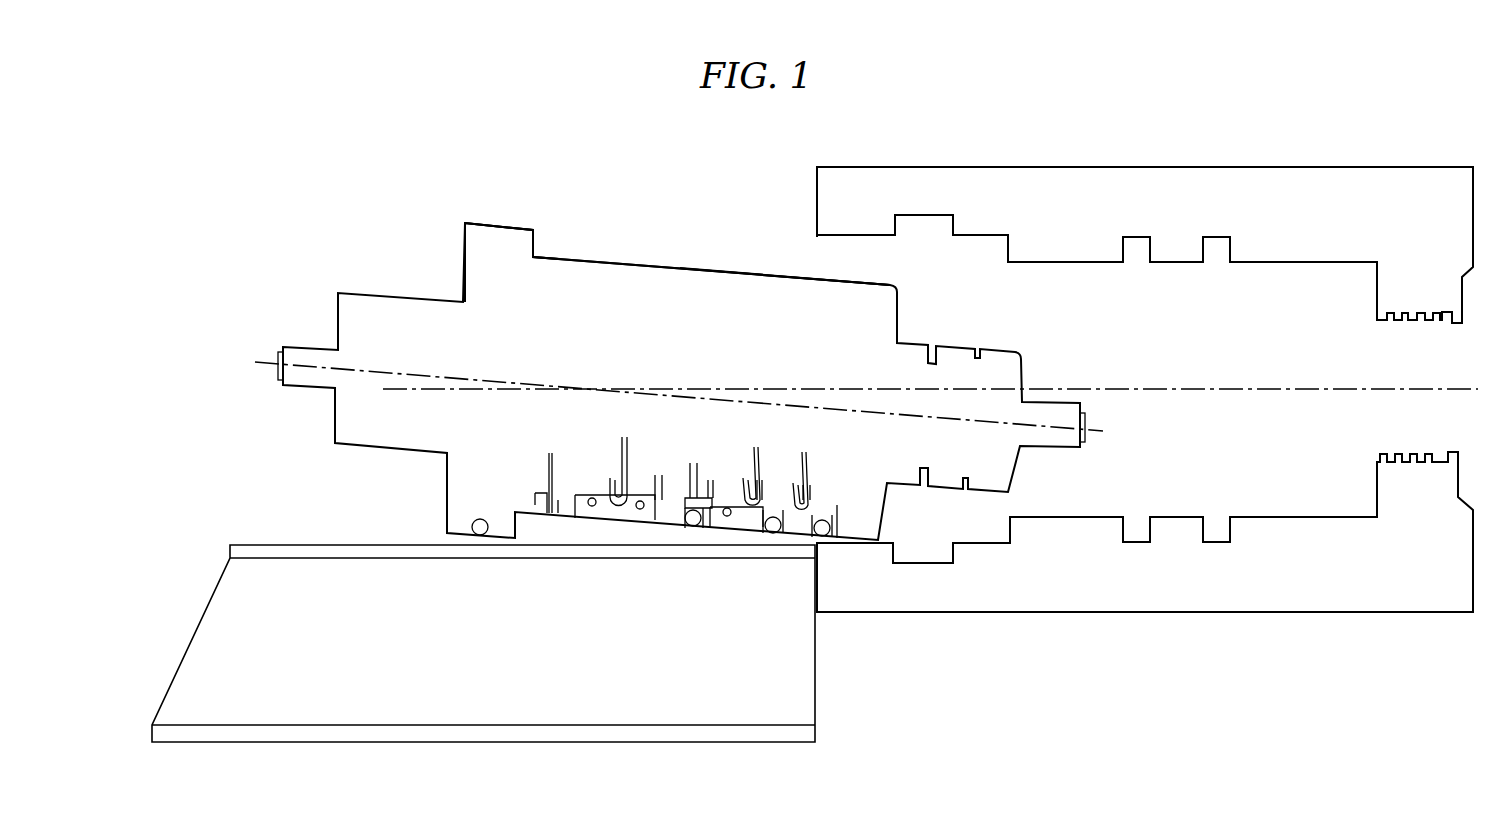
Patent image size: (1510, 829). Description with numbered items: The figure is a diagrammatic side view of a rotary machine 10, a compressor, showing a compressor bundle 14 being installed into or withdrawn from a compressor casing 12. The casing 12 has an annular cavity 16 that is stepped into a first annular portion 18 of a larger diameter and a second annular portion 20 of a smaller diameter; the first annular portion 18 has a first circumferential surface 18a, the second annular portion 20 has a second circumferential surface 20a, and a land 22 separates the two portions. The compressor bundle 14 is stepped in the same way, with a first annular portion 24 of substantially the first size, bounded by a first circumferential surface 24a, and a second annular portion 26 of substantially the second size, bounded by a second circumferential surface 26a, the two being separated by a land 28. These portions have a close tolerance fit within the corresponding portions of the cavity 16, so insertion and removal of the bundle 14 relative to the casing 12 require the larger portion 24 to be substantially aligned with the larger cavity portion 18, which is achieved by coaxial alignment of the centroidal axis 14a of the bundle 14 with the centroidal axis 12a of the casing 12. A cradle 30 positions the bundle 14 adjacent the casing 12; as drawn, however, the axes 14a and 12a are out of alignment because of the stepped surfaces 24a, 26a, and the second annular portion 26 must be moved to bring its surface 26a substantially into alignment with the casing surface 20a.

The rotary machine 10 is at (988, 120).
The compressor casing 12 is at (1214, 161).
The centroidal axis of casing 12a is at (1198, 387).
The compressor bundle 14 is at (632, 256).
The centroidal axis of compressor bundle 14a is at (452, 376).
The annular cavity 16 is at (820, 245).
The first annular portion of cavity 18 is at (983, 237).
The first circumferential surface of cavity 18a is at (883, 240).
The second annular portion of cavity 20 is at (1096, 262).
The second circumferential surface of cavity 20a is at (1245, 263).
The land 22 is at (996, 255).
The first annular portion of compressor bundle 24 is at (481, 222).
The first circumferential surface of bundle 24a is at (512, 226).
The second annular portion of compressor bundle 26 is at (678, 264).
The second circumferential surface of bundle 26a is at (734, 268).
The land 28 is at (541, 244).
The cradle 30 is at (450, 750).